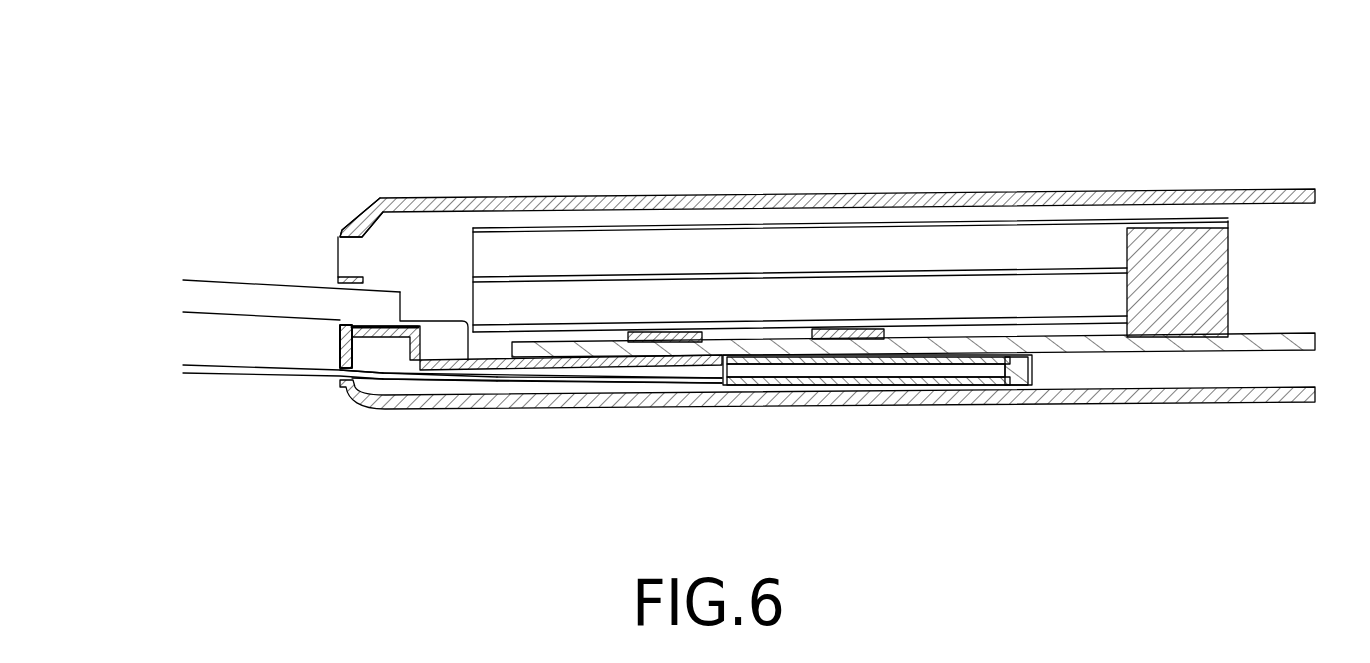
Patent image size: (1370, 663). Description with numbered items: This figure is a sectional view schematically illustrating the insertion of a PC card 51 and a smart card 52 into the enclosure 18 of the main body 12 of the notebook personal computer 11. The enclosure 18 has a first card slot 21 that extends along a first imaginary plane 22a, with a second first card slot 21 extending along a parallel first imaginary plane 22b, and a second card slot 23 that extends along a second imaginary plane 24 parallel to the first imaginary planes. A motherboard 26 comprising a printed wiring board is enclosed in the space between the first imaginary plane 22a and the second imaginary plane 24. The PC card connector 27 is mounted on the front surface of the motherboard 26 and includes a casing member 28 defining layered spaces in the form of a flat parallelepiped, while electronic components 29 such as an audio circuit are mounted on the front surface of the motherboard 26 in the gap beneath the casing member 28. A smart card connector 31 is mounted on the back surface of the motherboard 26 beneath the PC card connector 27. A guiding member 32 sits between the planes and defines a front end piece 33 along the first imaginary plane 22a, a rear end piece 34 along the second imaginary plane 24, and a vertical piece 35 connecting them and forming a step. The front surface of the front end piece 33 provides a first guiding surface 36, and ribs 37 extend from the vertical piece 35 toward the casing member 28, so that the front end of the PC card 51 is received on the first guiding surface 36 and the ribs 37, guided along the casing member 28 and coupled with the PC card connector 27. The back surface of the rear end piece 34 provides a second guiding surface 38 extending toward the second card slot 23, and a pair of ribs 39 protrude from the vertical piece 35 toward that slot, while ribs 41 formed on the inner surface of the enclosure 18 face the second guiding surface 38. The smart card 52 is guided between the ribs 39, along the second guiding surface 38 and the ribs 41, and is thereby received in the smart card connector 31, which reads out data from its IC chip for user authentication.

The notebook personal computer 11 is at (1212, 138).
The main body 12 is at (959, 188).
The enclosure 18 is at (797, 222).
The first card slot 21 is at (338, 238).
The first imaginary plane 22a is at (162, 328).
The first imaginary plane 22b is at (162, 278).
The second card slot 23 is at (340, 378).
The second imaginary plane 24 is at (162, 372).
The motherboard 26 is at (1283, 337).
The PC card connector 27 is at (1228, 268).
The casing member 28 is at (500, 227).
The electronic component 29 is at (706, 333).
The smart card connector 31 is at (1035, 388).
The guiding member 32 is at (679, 374).
The front end piece 33 is at (353, 387).
The rear end piece 34 is at (560, 367).
The vertical piece 35 is at (438, 380).
The first guiding surface 36 is at (403, 325).
The rib 37 is at (421, 345).
The second guiding surface 38 is at (622, 382).
The rib 39 is at (383, 382).
The rib 41 is at (498, 378).
The PC card 51 is at (213, 282).
The smart card 52 is at (225, 367).